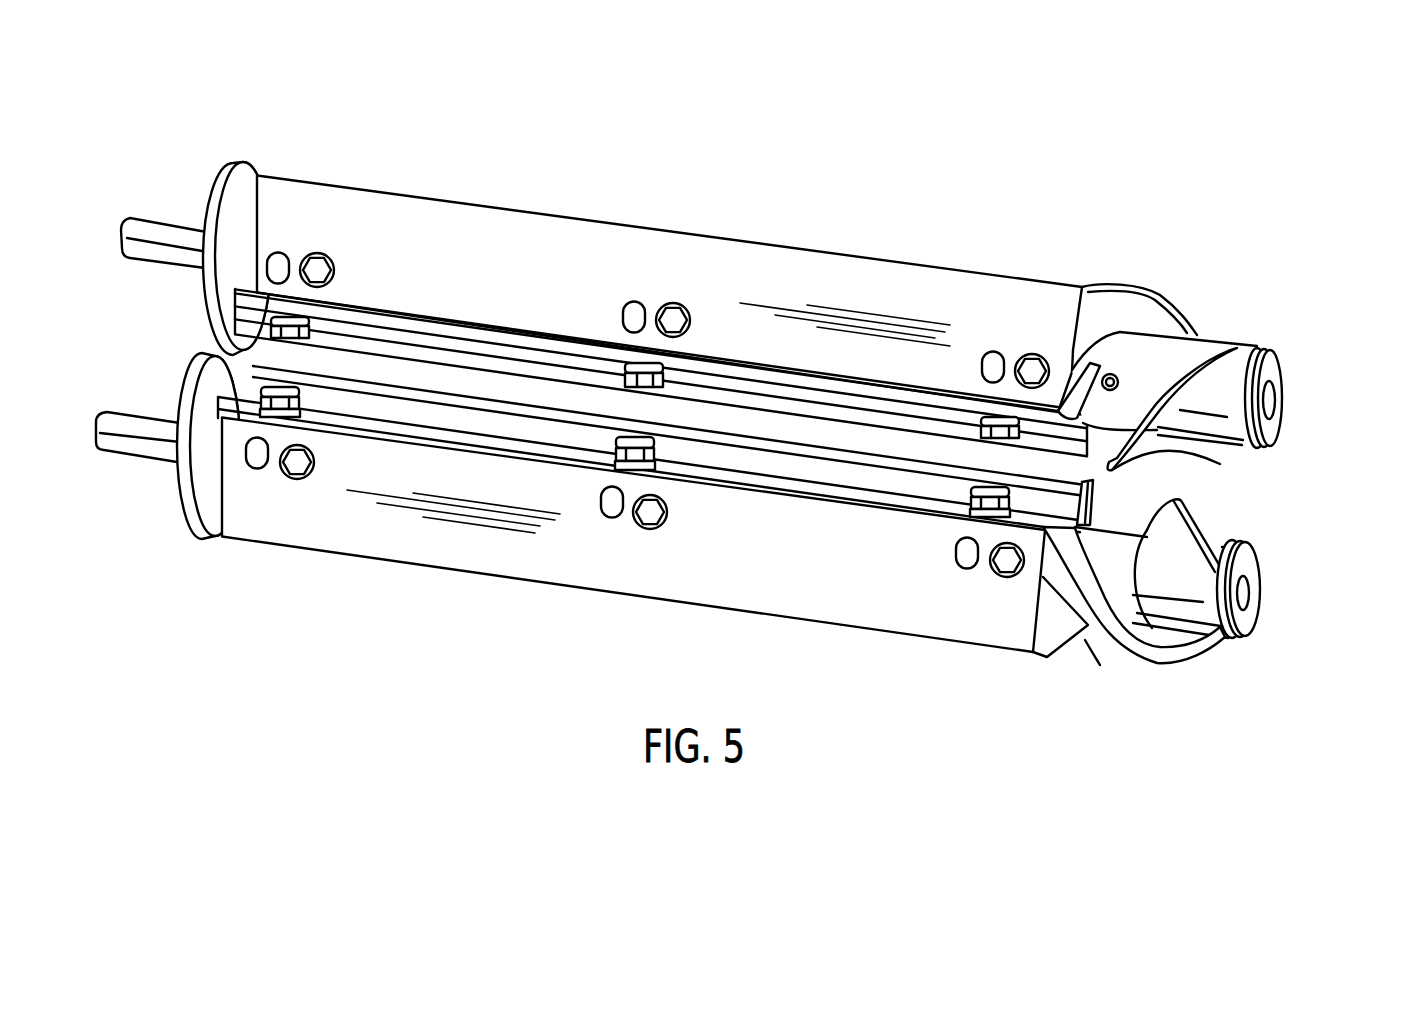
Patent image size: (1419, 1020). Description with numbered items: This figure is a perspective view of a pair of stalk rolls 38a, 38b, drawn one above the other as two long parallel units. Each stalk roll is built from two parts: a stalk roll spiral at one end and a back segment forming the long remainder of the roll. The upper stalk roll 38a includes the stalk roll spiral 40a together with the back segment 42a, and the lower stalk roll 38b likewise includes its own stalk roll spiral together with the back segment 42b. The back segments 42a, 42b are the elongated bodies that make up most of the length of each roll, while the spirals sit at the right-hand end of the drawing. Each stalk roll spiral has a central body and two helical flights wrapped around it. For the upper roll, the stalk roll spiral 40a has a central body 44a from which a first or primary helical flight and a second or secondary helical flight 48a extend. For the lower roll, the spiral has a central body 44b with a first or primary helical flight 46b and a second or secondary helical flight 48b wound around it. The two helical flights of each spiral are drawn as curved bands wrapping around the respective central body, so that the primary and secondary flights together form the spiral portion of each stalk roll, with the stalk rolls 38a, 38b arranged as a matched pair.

The stalk roll 38a is at (1300, 372).
The stalk roll 38b is at (1262, 645).
The stalk roll spiral 40a is at (1220, 338).
The back segment 42a is at (420, 199).
The back segment 42b is at (400, 563).
The central body 44a is at (1218, 395).
The central body 44b is at (1190, 587).
The primary helical flight 46b is at (1197, 516).
The secondary helical flight 48a is at (1213, 458).
The secondary helical flight 48b is at (1100, 665).